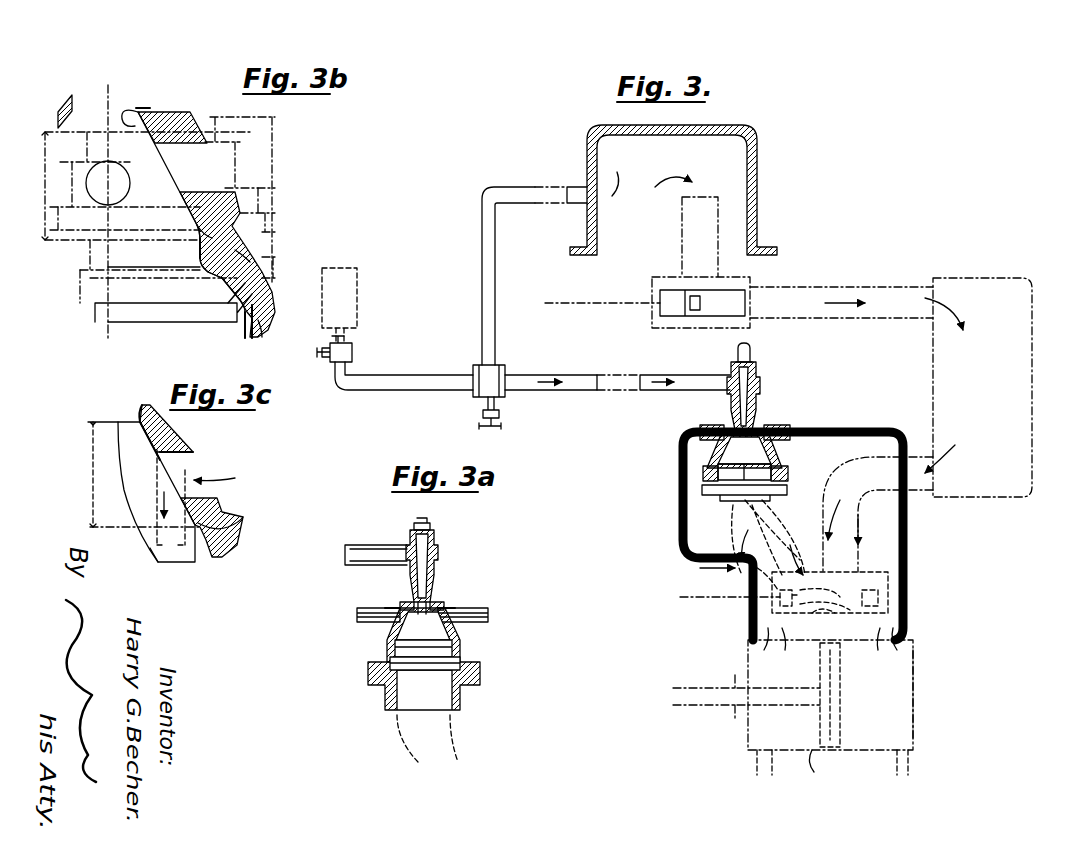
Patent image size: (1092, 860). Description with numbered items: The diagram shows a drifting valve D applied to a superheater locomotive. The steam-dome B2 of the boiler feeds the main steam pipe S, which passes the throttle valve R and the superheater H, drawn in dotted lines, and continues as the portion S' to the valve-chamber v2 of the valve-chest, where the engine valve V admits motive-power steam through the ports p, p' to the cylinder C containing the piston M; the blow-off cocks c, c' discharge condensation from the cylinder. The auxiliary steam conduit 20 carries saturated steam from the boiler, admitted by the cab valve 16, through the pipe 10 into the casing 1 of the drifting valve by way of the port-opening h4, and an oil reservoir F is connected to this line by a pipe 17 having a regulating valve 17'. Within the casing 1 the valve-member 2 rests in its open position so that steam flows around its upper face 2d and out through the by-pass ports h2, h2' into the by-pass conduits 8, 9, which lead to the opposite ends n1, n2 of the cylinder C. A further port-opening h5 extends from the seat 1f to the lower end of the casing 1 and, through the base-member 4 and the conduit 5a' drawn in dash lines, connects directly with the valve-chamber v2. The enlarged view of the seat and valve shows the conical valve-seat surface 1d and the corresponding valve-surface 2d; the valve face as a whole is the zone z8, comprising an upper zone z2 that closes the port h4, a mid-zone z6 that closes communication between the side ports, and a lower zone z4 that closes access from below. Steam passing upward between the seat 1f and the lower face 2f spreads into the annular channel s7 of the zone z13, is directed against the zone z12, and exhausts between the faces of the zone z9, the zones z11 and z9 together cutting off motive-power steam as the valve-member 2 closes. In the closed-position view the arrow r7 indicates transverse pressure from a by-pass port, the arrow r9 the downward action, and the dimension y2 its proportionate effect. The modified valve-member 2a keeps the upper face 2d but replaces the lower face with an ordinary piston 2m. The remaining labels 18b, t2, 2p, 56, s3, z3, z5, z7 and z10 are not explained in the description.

In FIG. 3, the steam-dome B2 is at (757, 172).
In FIG. 3, the supply pipe 18b is at (482, 287).
In FIG. 3, the throttle valve R is at (673, 281).
In FIG. 3, the main steam pipe S is at (841, 289).
In FIG. 3, the superheater H is at (1032, 392).
In FIG. 3, the valve stem t2 is at (752, 361).
In FIG. 3, the pipe 10 is at (758, 393).
In FIG. 3A, the pipe 10 is at (426, 574).
In FIG. 3, the pipe 17 is at (420, 388).
In FIG. 3, the regulating valve 17' is at (349, 349).
In FIG. 3, the oil reservoir F is at (357, 289).
In FIG. 3, the regulating valve 16 is at (485, 422).
In FIG. 3, the auxiliary steam conduit 20 is at (560, 393).
In FIG. 3A, the auxiliary steam conduit 20 is at (376, 545).
In FIG. 3, the by-pass port h2 is at (755, 529).
In FIG. 3A, the by-pass port h2 is at (365, 599).
In FIG. 3, the port-opening h4 is at (732, 424).
In FIG. 3A, the port-opening h4 is at (408, 604).
In FIG. 3B, the port-opening h4 is at (142, 108).
In FIG. 3, the drifting valve D is at (752, 432).
In FIG. 3A, the drifting valve D is at (431, 612).
In FIG. 3, the passage 2p is at (760, 434).
In FIG. 3, the by-pass port h2' is at (836, 419).
In FIG. 3A, the by-pass port h2' is at (482, 591).
In FIG. 3B, the by-pass port h2' is at (178, 117).
In FIG. 3C, the by-pass port h2' is at (197, 450).
In FIG. 3, the casing 1 is at (712, 447).
In FIG. 3A, the casing 1 is at (462, 645).
In FIG. 3B, the casing 1 is at (268, 318).
In FIG. 3C, the casing 1 is at (240, 517).
In FIG. 3, the valve-member 2 is at (762, 455).
In FIG. 3C, the valve-member 2 is at (190, 560).
In FIG. 3, the base-member 4 is at (712, 488).
In FIG. 3A, the base-member 4 is at (462, 696).
In FIG. 3, the by-pass conduit 8 is at (680, 535).
In FIG. 3A, the by-pass conduit 8 is at (357, 616).
In FIG. 3, the conduit 5a' is at (695, 578).
In FIG. 3, the by-pass conduit 9 is at (905, 548).
In FIG. 3A, the by-pass conduit 9 is at (488, 614).
In FIG. 3, the main steam pipe portion S' is at (878, 514).
In FIG. 3, the valve-chamber v2 is at (882, 582).
In FIG. 3, the engine valve V is at (862, 598).
In FIG. 3, the port p is at (775, 649).
In FIG. 3, the port p' is at (880, 649).
In FIG. 3, the piston M is at (835, 700).
In FIG. 3, the cylinder end n1 is at (760, 727).
In FIG. 3, the cylinder end n2 is at (905, 717).
In FIG. 3, the blow-off cock c is at (743, 769).
In FIG. 3, the cylinder C is at (817, 772).
In FIG. 3, the blow-off cock c' is at (924, 765).
In FIG. 3A, the valve-surface 2d is at (440, 610).
In FIG. 3B, the valve-surface 2d is at (168, 172).
In FIG. 3C, the valve-surface 2d is at (152, 441).
In FIG. 3A, the valve-member 2a is at (410, 641).
In FIG. 3A, the piston 2m is at (468, 660).
In FIG. 3B, the valve-seat surface 1d is at (136, 106).
In FIG. 3C, the valve-seat surface 1d is at (141, 408).
In FIG. 3B, the seat 1f is at (190, 212).
In FIG. 3B, the groove 56 is at (209, 232).
In FIG. 3B, the annular channel space s7 is at (214, 252).
In FIG. 3B, the outlet passage s3 is at (242, 328).
In FIG. 3B, the port-opening h5 is at (260, 330).
In FIG. 3B, the lower valve-face 2f is at (225, 290).
In FIG. 3B, the upper zone z2 is at (85, 147).
In FIG. 3B, the dimension z3 is at (220, 129).
In FIG. 3B, the lower zone z4 is at (60, 221).
In FIG. 3B, the dimension z5 is at (270, 199).
In FIG. 3B, the mid-zone z6 is at (72, 178).
In FIG. 3B, the dimension z7 is at (235, 166).
In FIG. 3B, the valve face z8 is at (88, 247).
In FIG. 3C, the valve face z8 is at (91, 483).
In FIG. 3B, the zone z9 is at (273, 166).
In FIG. 3B, the dimension z10 is at (82, 302).
In FIG. 3B, the zone z11 is at (278, 271).
In FIG. 3B, the zone z12 is at (80, 283).
In FIG. 3B, the zone z13 is at (268, 225).
In FIG. 3C, the arrow r7 is at (218, 468).
In FIG. 3C, the arrow r9 is at (163, 508).
In FIG. 3C, the dimension y2 is at (170, 543).